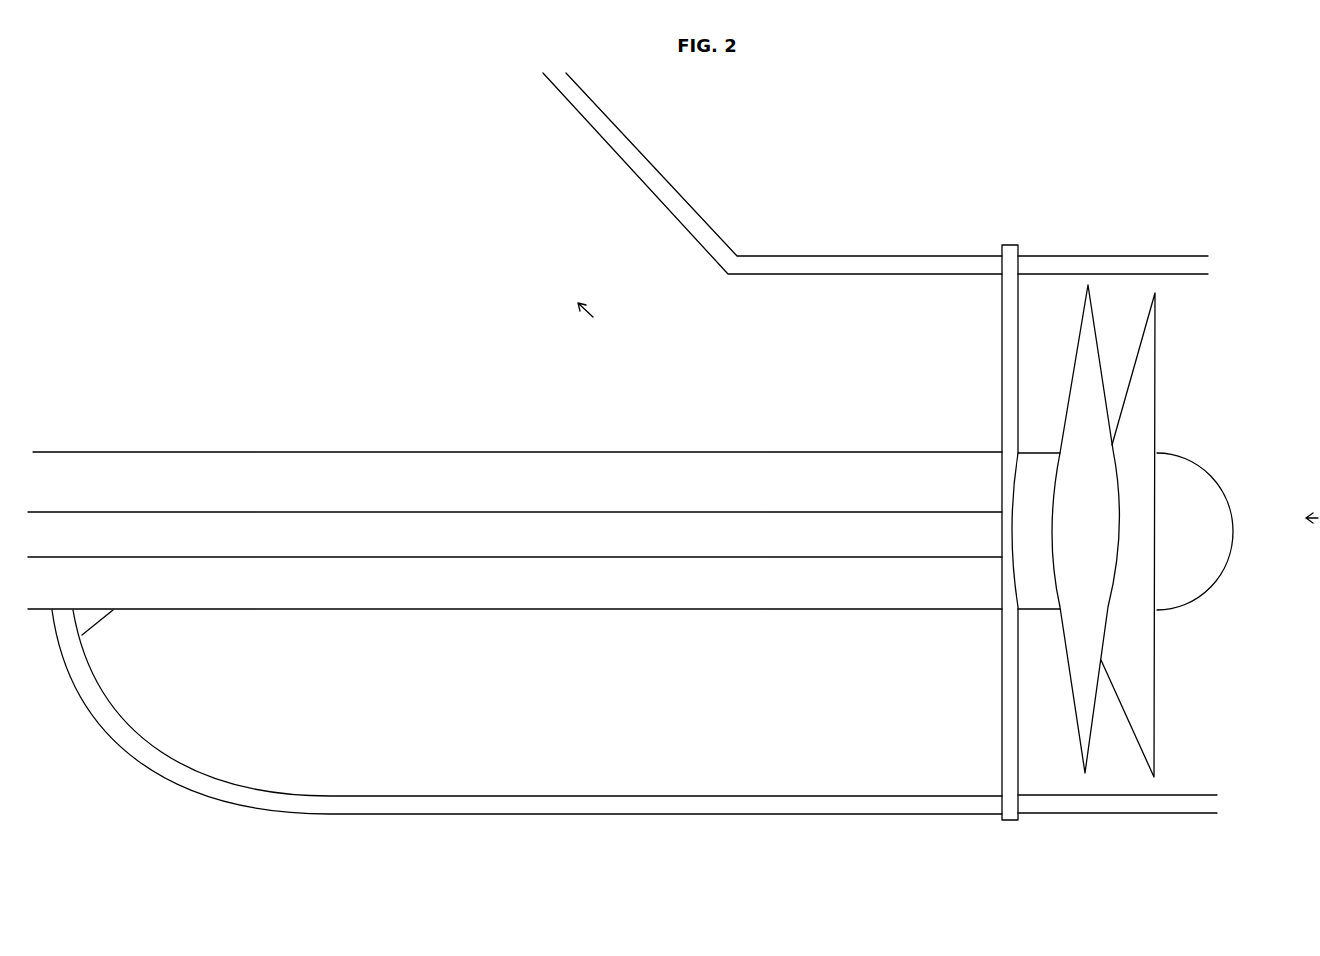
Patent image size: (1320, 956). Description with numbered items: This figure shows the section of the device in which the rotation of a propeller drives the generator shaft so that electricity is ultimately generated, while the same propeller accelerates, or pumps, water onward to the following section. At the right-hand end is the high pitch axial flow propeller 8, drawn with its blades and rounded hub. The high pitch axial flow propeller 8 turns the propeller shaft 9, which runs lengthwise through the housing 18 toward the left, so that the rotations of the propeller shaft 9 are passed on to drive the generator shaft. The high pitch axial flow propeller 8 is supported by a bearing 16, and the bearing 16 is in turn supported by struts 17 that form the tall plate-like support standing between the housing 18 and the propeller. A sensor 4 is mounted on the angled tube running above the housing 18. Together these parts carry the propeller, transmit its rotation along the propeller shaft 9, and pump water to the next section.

The sensor 4 is at (875, 278).
The high pitch axial flow propeller 8 is at (1211, 434).
The propeller shaft 9 is at (678, 512).
The bearing 16 is at (1047, 453).
The struts 17 is at (1012, 245).
The housing 18 is at (547, 452).